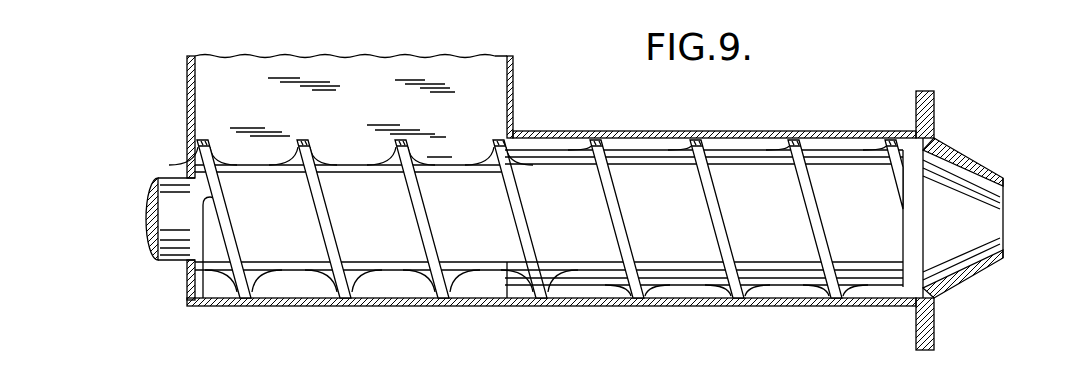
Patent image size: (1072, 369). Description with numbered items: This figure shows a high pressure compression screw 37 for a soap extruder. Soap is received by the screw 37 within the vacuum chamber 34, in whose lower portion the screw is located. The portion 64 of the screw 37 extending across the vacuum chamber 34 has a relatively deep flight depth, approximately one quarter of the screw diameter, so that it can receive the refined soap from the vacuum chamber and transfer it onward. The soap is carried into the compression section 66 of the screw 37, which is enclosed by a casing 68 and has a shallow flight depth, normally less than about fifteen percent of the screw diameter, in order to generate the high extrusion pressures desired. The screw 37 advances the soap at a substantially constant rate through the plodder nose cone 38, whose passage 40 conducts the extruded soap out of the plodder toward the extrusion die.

The vacuum chamber 34 is at (500, 74).
The casing 68 is at (689, 131).
The deep-flighted portion of screw 64 is at (378, 223).
The compression section 66 is at (770, 223).
The compression screw 37 is at (597, 268).
The passage 40 is at (967, 229).
The plodder nose cone 38 is at (990, 227).